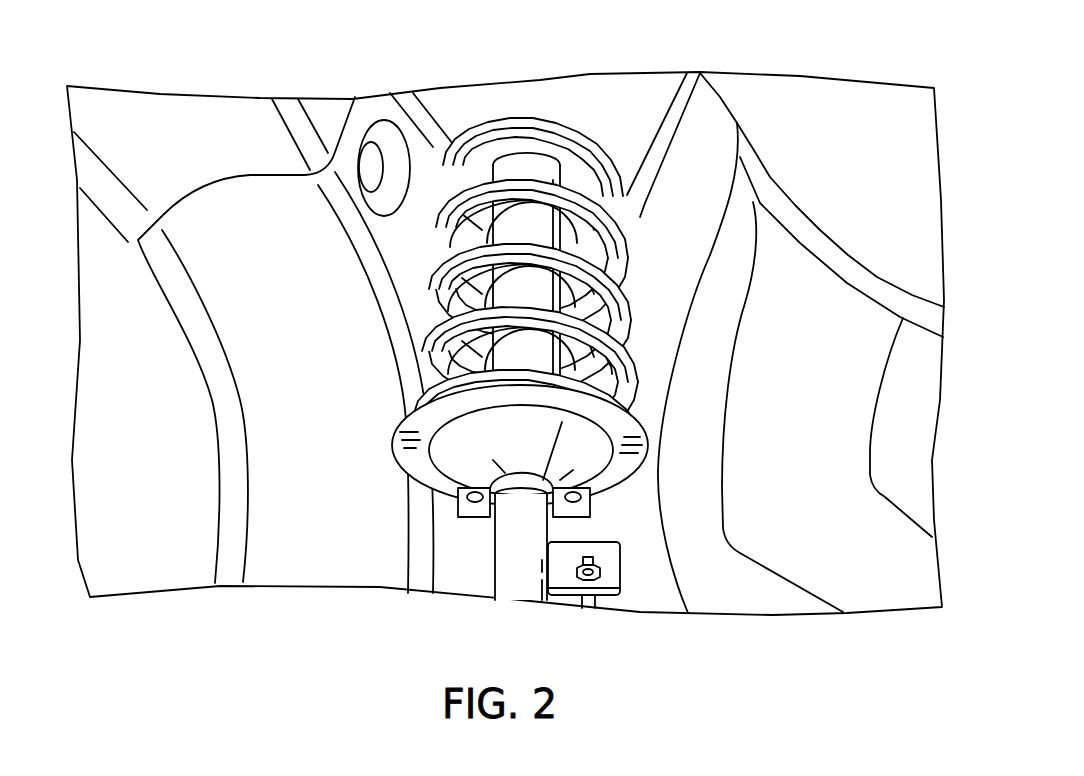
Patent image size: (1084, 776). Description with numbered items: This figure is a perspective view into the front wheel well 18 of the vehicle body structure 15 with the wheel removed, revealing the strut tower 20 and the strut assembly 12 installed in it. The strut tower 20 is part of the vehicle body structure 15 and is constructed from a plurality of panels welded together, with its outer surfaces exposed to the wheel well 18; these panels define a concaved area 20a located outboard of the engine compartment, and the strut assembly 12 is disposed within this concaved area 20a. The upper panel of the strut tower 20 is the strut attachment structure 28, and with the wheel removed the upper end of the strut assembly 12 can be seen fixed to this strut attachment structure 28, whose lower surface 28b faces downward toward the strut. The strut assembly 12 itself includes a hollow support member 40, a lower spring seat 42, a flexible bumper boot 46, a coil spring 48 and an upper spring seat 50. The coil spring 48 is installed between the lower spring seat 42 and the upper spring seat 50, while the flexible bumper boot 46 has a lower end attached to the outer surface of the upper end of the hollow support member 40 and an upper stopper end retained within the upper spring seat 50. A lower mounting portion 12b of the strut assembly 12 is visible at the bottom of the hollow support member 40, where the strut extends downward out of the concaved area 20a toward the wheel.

The vehicle body structure 15 is at (772, 66).
The wheel well 18 is at (140, 311).
The strut tower 20 is at (366, 92).
The concaved area 20a is at (635, 205).
The strut attachment structure 28 is at (643, 100).
The lower surface 28b is at (538, 94).
The strut assembly 12 is at (586, 344).
The lower mounting bracket 12b is at (488, 567).
The hollow support member 40 is at (520, 550).
The lower spring seat 42 is at (621, 468).
The flexible bumper boot 46 is at (497, 228).
The coil spring 48 is at (550, 305).
The upper spring seat 50 is at (487, 132).